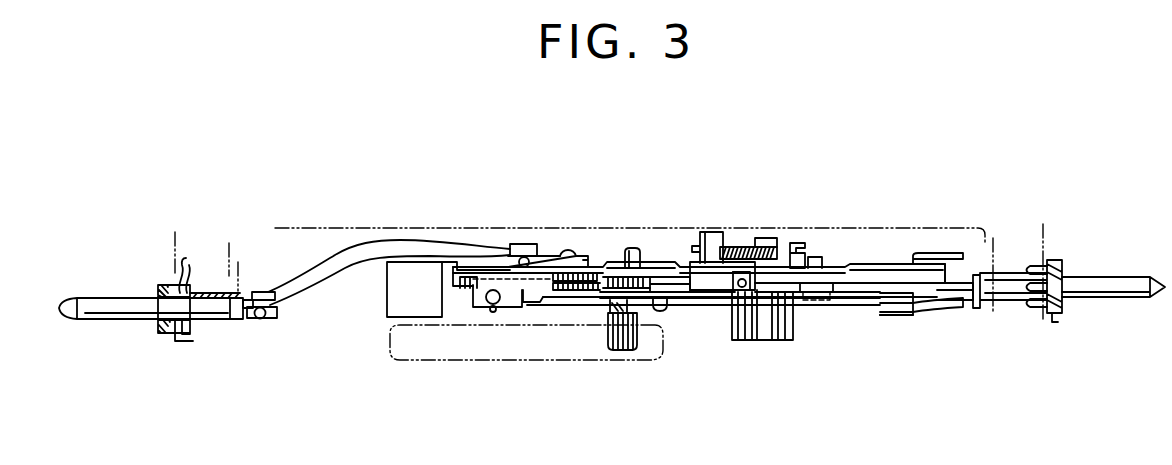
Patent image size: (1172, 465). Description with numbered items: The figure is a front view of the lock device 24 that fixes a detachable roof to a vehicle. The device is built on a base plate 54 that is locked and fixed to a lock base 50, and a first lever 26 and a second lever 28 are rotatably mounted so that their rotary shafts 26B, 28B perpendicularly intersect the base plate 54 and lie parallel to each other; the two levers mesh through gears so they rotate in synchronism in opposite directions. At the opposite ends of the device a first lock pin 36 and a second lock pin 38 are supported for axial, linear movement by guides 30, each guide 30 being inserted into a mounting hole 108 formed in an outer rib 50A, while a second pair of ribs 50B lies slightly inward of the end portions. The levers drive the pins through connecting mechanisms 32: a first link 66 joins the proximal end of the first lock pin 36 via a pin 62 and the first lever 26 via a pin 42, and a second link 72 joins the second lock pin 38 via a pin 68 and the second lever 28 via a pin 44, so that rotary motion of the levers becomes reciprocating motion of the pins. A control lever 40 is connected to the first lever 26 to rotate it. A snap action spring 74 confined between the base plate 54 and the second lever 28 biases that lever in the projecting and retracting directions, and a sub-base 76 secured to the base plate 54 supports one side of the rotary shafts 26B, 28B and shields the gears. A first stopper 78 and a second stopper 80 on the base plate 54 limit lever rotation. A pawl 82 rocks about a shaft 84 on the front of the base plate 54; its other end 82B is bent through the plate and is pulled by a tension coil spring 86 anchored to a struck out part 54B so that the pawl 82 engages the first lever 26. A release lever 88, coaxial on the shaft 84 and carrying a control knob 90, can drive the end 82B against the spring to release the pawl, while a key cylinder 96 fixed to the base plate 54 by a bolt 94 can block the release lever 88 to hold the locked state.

The lock device 24 is at (718, 212).
The first lever 26 is at (674, 303).
The rotary shaft 26B is at (622, 308).
The second lever 28 is at (548, 252).
The rotary shaft 28B is at (573, 250).
The guide 30 is at (202, 326).
The connecting mechanism 32 is at (452, 131).
The first lock pin 36 is at (1078, 296).
The second lock pin 38 is at (122, 297).
The control lever 40 is at (438, 361).
The pin 42 is at (683, 301).
The pin 44 is at (518, 245).
The lock base 50 is at (285, 229).
The outer rib 50A is at (177, 228).
The rib 50B is at (231, 241).
The base plate 54 is at (850, 263).
The struck out part 54B is at (793, 245).
The pin 62 is at (950, 304).
The first link 66 is at (832, 308).
The pin 68 is at (303, 258).
The second link 72 is at (355, 252).
The snap action spring 74 is at (470, 288).
The sub-base 76 is at (566, 293).
The first stopper 78 is at (658, 312).
The second stopper 80 is at (633, 250).
The pawl 82 is at (703, 273).
The other end of pawl 82B is at (702, 247).
The shaft 84 is at (722, 283).
The tension coil spring 86 is at (747, 246).
The release lever 88 is at (743, 307).
The control knob 90 is at (753, 286).
The bolt 94 is at (818, 299).
The key cylinder 96 is at (793, 331).
The mounting hole 108 is at (167, 334).